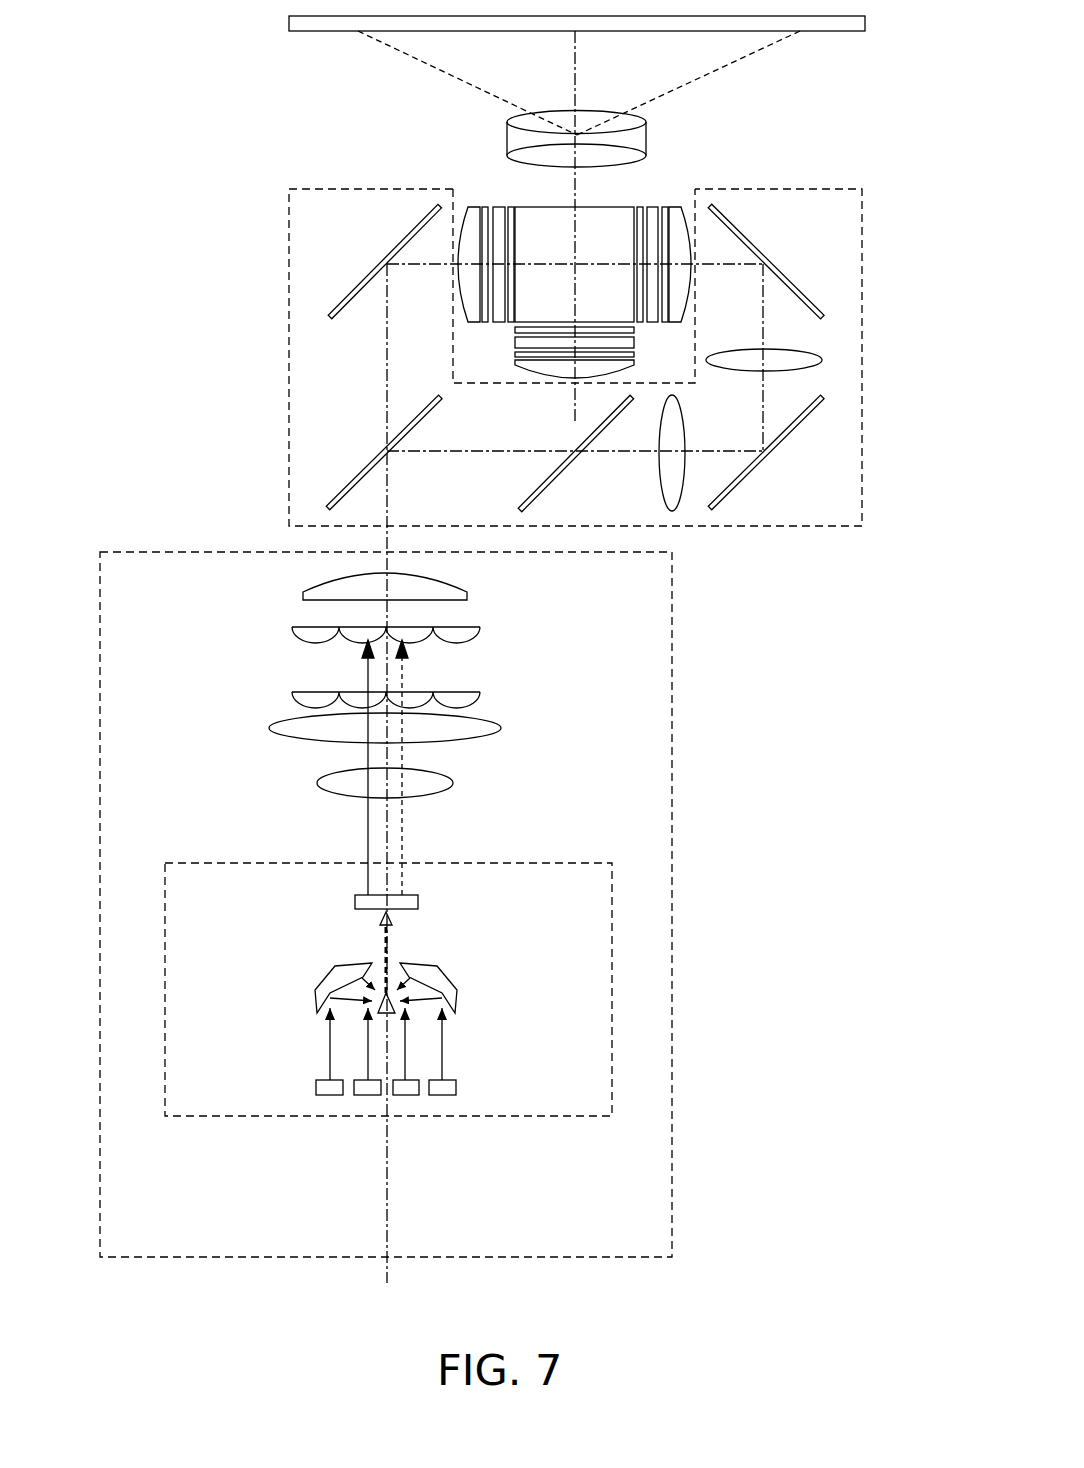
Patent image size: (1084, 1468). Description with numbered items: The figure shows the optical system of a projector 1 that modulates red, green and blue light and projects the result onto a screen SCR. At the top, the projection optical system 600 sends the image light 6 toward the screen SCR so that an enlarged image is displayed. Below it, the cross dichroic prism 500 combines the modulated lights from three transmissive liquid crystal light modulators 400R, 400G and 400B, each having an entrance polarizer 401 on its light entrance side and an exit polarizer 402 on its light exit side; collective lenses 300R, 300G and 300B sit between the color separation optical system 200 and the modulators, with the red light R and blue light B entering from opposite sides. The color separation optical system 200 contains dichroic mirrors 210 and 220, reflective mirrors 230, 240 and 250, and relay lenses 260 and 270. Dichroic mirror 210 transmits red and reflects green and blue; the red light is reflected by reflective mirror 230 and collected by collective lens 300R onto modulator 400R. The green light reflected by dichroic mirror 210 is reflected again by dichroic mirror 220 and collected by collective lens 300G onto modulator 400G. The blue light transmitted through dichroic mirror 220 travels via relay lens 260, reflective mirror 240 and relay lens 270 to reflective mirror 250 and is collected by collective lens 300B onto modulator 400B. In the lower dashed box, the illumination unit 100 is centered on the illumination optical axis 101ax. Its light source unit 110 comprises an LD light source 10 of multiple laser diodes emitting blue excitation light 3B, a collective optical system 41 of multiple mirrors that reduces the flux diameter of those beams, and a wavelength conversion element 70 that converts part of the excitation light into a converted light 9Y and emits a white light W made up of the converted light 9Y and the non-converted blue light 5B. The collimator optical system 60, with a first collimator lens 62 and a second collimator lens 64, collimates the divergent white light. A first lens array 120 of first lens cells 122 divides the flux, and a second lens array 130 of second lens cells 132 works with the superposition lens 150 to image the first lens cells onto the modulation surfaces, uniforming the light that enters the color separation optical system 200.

The projector 1 is at (872, 82).
The screen SCR is at (828, 31).
The projection light 6 is at (557, 115).
The projection optical system 600 is at (507, 143).
The color separation optical system 200 is at (788, 526).
The reflective mirror 230 is at (331, 312).
The reflective mirror 250 is at (818, 310).
The dichroic mirror 210 is at (342, 490).
The dichroic mirror 220 is at (522, 504).
The reflective mirror 240 is at (717, 505).
The relay lens 260 is at (660, 497).
The relay lens 270 is at (835, 344).
The cross dichroic prism 500 is at (610, 217).
The light modulator 400R is at (495, 207).
The light modulator 400G is at (513, 357).
The light modulator 400B is at (664, 192).
The collective lens 300R is at (472, 207).
The collective lens 300G is at (562, 380).
The collective lens 300B is at (684, 316).
The entrance polarizer 401 is at (484, 322).
The exit polarizer 402 is at (505, 322).
The red light R is at (440, 253).
The blue light B is at (710, 253).
The illumination unit 100 is at (672, 1072).
The light source unit 110 is at (533, 1116).
The superposition lens 150 is at (467, 598).
The second lens array 130 is at (480, 632).
The second lens cell 132 is at (292, 636).
The first lens array 120 is at (480, 697).
The first lens cell 122 is at (292, 697).
The fluorescent light 9Y is at (400, 664).
The blue light 5B is at (370, 667).
The white light W is at (553, 642).
The collimator optical system 60 is at (178, 748).
The second collimator lens 64 is at (270, 740).
The first collimator lens 62 is at (325, 790).
The wavelength conversion element 70 is at (418, 897).
The blue light 3B is at (390, 938).
The collective optical system 41 is at (488, 943).
The LD light source 10 is at (316, 1092).
The illumination optical axis 101ax is at (387, 1281).